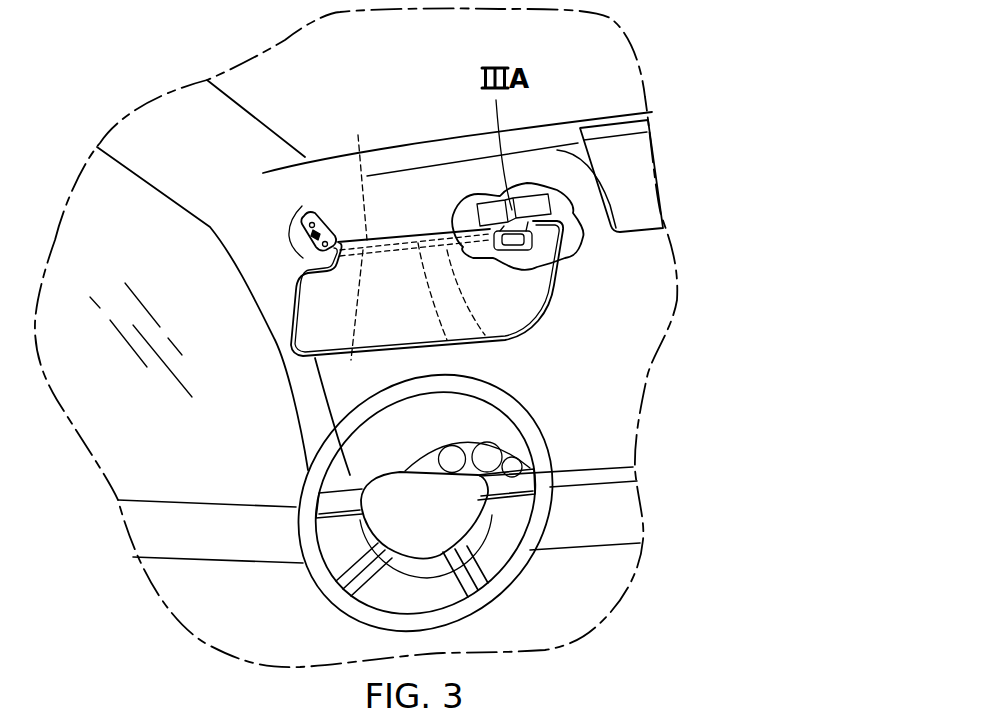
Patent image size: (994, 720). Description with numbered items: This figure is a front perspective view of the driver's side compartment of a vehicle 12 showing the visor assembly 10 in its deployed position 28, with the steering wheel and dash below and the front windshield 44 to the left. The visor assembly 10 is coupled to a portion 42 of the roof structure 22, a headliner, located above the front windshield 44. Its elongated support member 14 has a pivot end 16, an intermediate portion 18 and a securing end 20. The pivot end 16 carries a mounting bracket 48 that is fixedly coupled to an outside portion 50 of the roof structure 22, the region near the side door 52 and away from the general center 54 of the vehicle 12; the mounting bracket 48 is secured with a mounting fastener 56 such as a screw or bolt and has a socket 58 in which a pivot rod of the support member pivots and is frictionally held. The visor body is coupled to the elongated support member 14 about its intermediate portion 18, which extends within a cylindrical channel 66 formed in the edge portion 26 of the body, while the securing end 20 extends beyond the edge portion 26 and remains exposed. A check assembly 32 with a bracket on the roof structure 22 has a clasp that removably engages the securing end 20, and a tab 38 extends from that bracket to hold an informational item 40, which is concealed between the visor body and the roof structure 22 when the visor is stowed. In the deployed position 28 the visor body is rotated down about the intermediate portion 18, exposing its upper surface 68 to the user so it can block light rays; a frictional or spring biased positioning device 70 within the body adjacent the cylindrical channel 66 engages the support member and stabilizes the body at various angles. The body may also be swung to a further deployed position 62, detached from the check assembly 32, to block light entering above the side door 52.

The visor assembly 10 is at (538, 204).
The vehicle 12 is at (332, 100).
The elongated support member 14 is at (427, 297).
The pivot end 16 is at (317, 238).
The intermediate portion 18 is at (456, 346).
The securing end 20 is at (527, 240).
The roof structure 22 is at (435, 71).
The edge portion 26 is at (430, 227).
The deployed position 28 is at (288, 352).
The check assembly 32 is at (520, 249).
The tab 38 is at (510, 207).
The informational item 40 is at (530, 197).
The portion of the roof structure 42 is at (390, 219).
The front windshield 44 is at (571, 423).
The mounting bracket 48 is at (302, 204).
The outside portion 50 is at (318, 197).
The side door 52 is at (197, 520).
The general center 54 is at (606, 140).
The mounting fastener 56 is at (309, 225).
The socket 58 is at (308, 247).
The deployed position 62 is at (312, 255).
The cylindrical channel 66 is at (357, 177).
The upper surface 68 is at (410, 323).
The positioning device 70 is at (348, 319).